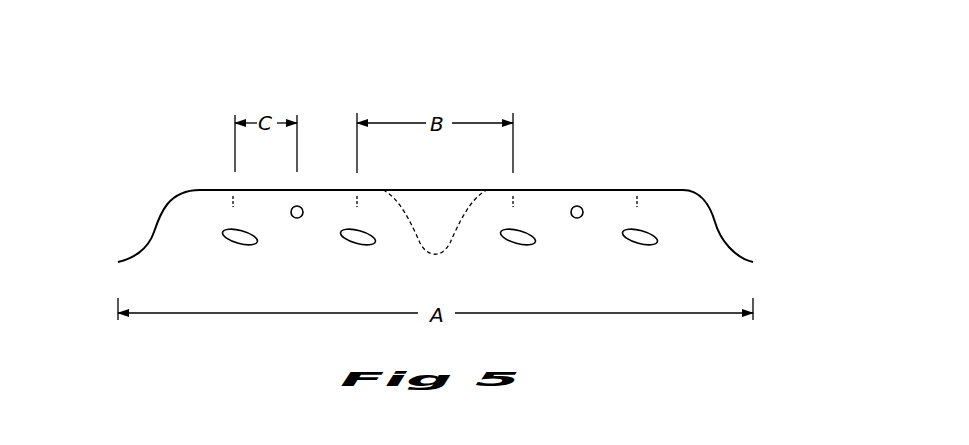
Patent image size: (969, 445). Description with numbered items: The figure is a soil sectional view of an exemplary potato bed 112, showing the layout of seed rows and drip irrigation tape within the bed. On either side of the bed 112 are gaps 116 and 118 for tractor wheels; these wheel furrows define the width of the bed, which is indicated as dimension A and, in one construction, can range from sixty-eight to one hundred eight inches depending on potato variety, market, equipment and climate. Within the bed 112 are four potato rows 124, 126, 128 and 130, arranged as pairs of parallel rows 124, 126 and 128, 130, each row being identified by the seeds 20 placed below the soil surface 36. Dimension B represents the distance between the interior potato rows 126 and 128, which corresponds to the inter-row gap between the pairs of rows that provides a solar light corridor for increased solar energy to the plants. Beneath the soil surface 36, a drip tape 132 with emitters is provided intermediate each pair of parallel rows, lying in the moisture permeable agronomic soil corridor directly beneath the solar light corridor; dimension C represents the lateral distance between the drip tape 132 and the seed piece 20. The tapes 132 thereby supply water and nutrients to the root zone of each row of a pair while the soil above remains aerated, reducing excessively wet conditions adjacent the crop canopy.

The bed 112 is at (647, 58).
The gap 116 is at (128, 237).
The gap 118 is at (742, 235).
The potato row 124 is at (223, 182).
The potato row 126 is at (342, 185).
The potato row 128 is at (527, 183).
The potato row 130 is at (648, 178).
The soil surface 36 is at (550, 190).
The seeds 20 is at (237, 245).
The tapes 132 is at (298, 219).